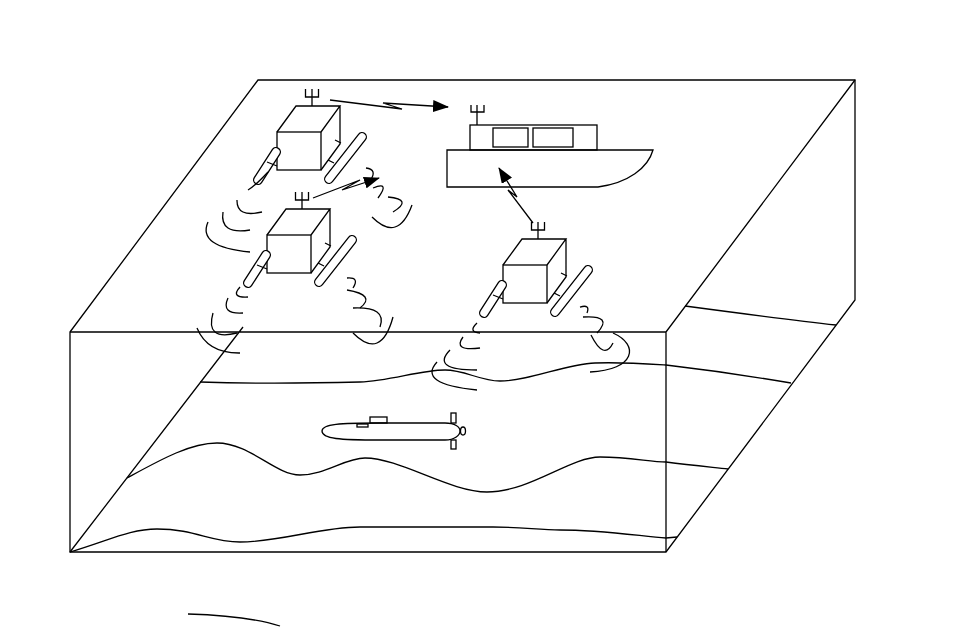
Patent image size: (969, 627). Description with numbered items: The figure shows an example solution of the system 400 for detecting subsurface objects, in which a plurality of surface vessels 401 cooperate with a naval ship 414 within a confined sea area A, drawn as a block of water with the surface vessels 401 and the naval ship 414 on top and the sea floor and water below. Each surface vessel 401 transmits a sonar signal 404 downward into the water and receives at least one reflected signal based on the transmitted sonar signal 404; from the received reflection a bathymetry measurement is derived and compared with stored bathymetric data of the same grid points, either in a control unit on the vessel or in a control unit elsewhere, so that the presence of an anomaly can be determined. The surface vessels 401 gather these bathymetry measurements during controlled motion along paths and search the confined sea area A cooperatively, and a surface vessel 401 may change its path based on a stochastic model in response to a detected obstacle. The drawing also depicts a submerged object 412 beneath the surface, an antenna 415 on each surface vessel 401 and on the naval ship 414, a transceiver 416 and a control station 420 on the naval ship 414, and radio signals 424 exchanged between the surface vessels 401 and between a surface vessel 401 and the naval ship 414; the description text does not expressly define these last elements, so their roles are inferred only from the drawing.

The system 400 is at (302, 52).
The surface vessel 401 is at (283, 110).
The sonar signal 404 is at (216, 295).
The underwater vehicle 412 is at (407, 409).
The naval ship 414 is at (507, 107).
The antenna 415 is at (309, 92).
The transceiver 416 is at (494, 131).
The control station 420 is at (578, 128).
The radio frequency signal 424 is at (420, 102).
The confined sea area A is at (698, 93).